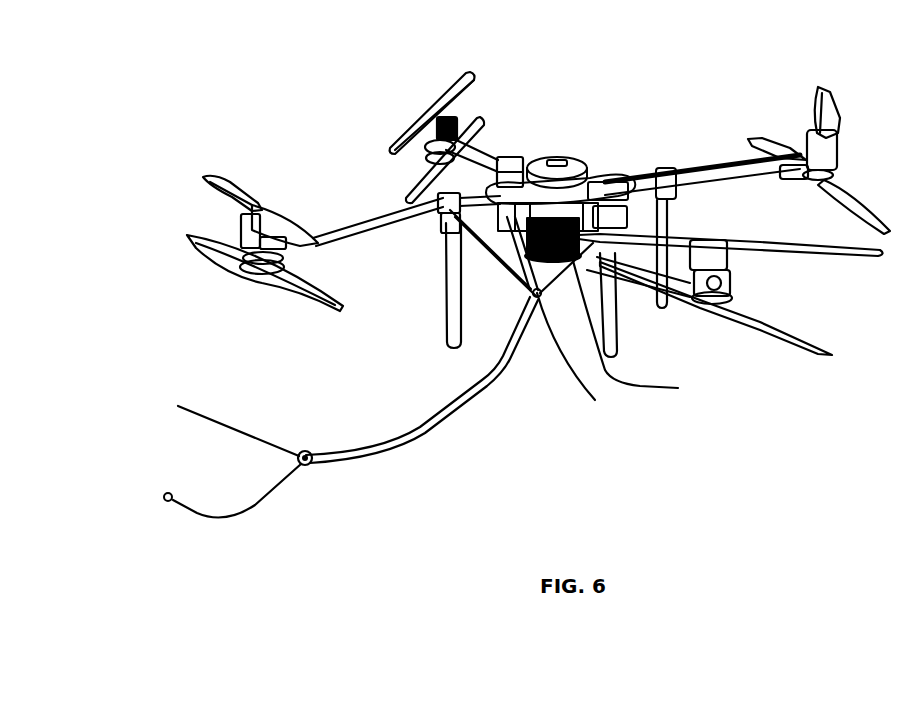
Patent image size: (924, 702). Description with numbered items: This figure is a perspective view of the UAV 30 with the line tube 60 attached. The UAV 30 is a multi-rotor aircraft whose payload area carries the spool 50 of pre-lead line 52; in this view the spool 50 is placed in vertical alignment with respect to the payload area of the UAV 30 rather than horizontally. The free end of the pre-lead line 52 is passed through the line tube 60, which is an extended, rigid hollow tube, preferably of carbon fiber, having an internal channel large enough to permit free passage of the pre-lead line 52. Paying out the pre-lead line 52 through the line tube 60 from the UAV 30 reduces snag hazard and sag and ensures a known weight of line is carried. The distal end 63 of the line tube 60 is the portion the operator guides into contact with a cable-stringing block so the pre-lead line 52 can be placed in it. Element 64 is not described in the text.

The UAV 30 is at (355, 84).
The spool 50 is at (575, 355).
The pre-lead line 52 is at (258, 505).
The line tube 60 is at (448, 421).
The distal end 63 is at (300, 452).
The line 64 is at (224, 426).